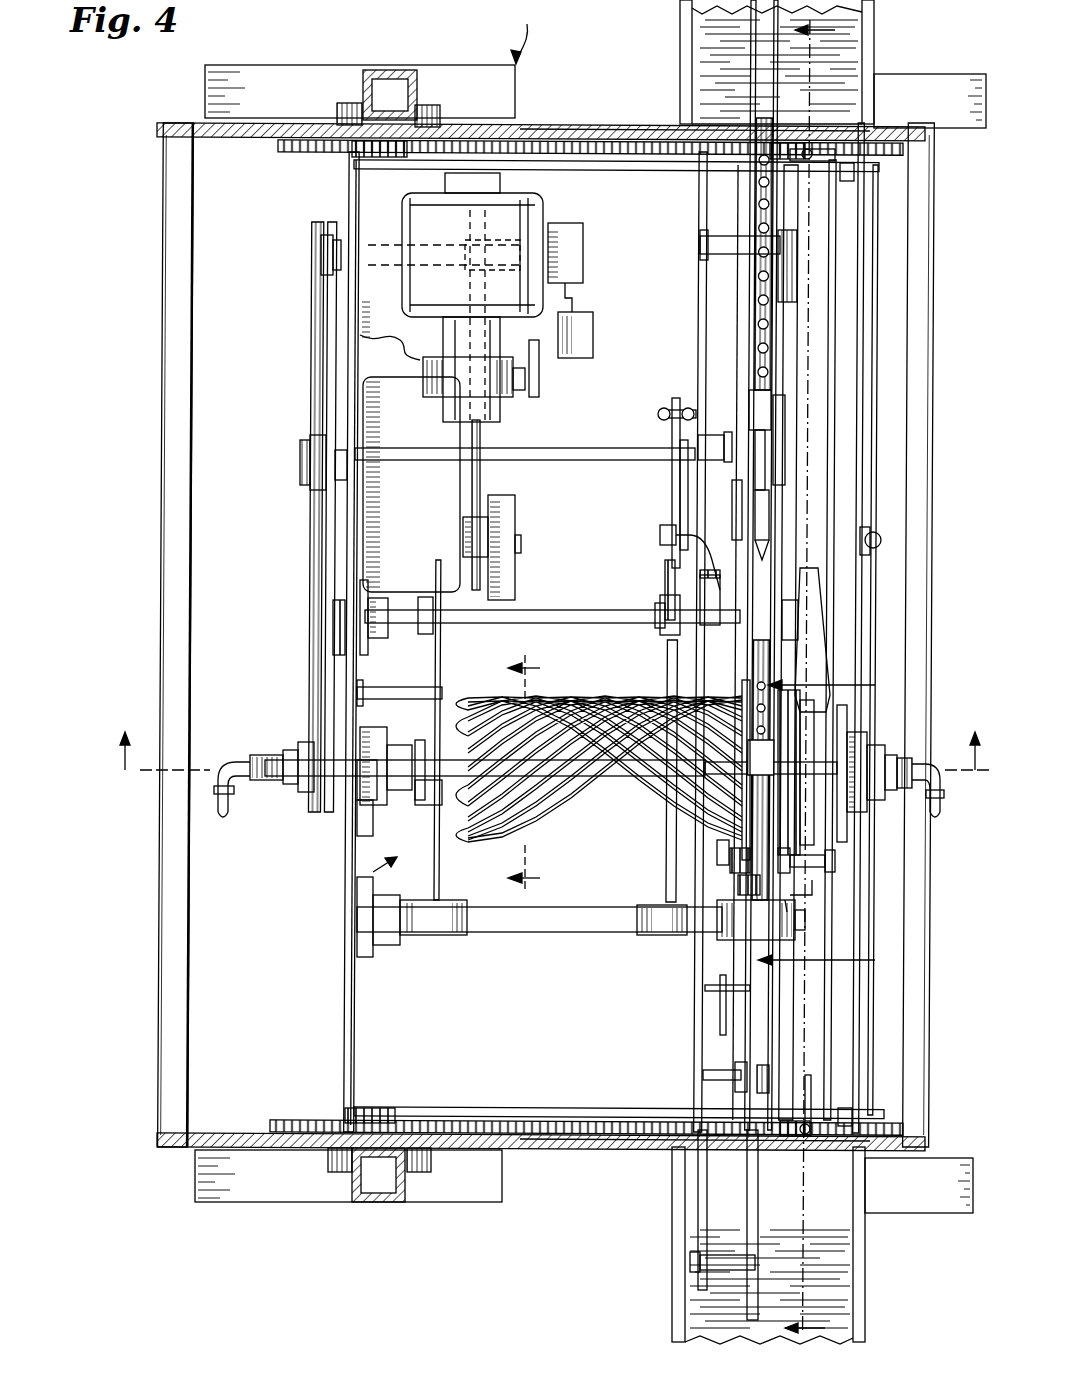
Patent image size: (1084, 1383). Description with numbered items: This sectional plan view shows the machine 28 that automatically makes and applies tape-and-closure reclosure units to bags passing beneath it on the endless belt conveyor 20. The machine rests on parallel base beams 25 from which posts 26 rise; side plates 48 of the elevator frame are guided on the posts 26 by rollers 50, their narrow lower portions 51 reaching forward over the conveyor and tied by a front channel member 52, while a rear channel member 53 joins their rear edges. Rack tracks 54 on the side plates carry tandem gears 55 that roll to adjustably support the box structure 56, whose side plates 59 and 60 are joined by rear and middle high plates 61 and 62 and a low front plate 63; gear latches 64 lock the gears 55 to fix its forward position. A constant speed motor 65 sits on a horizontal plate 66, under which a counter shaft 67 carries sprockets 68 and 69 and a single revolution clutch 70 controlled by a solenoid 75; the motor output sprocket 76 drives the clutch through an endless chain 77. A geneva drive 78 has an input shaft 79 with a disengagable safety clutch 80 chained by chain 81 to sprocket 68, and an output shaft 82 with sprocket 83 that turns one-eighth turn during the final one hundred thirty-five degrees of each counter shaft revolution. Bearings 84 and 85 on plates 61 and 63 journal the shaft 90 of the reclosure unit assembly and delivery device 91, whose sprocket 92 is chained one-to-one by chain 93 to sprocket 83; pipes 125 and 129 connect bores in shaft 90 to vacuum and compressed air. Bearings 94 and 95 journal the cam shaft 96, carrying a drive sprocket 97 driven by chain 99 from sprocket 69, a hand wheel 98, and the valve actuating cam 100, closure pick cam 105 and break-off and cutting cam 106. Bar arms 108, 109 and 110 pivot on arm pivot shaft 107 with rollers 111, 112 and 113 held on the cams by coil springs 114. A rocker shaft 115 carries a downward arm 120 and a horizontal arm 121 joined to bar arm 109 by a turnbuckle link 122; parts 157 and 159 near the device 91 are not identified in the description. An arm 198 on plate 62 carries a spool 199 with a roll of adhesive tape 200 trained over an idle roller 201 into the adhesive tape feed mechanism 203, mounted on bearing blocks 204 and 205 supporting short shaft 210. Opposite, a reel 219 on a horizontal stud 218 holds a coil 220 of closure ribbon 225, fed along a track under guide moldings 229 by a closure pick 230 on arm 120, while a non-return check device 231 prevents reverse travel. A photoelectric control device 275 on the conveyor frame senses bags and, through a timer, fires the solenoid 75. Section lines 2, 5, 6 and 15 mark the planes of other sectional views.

The section line 2- 2 is at (534, 771).
The section line 5- 5 is at (818, 678).
The section line 6- 6 is at (828, 823).
The section line 15- 15 is at (549, 767).
The endless belt conveyor 20 is at (850, 10).
The base beams 25 is at (212, 92).
The posts 26 is at (392, 70).
The machine 28 is at (527, 32).
The side plates 48 is at (298, 125).
The rollers 50 is at (350, 103).
The narrow lower portions 51 is at (620, 135).
The front channel member 52 is at (915, 1050).
The rear channel member 53 is at (172, 1008).
The rack tracks 54 is at (282, 155).
The gears 55 is at (350, 157).
The box structure 56 is at (342, 1043).
The side plate 59 is at (618, 170).
The side plate 60 is at (566, 1108).
The rear high plate 61 is at (342, 1000).
The middle high plate 62 is at (695, 1047).
The low front plate 63 is at (808, 1034).
The gear latches 64 is at (855, 175).
The constant speed motor 65 is at (520, 205).
The horizontal plate 66 is at (370, 324).
The counter shaft 67 is at (320, 255).
The sprocket 68 is at (403, 232).
The sprocket 69 is at (333, 268).
The single revolution clutch 70 is at (555, 226).
The solenoid 75 is at (580, 330).
The output sprocket 76 is at (540, 385).
The endless chain 77 is at (535, 368).
The geneva drive 78 is at (363, 390).
The input shaft 79 is at (463, 538).
The safety clutch 80 is at (505, 528).
The endless chain 81 is at (480, 478).
The output shaft 82 is at (300, 464).
The sprocket 83 is at (310, 488).
The bearing 84 is at (350, 825).
The bearing 85 is at (850, 722).
The shaft 90 is at (335, 760).
The reclosure unit assembly and delivery device 91 is at (345, 872).
The sprocket 92 is at (298, 745).
The endless chain 93 is at (310, 678).
The bearing 94 is at (360, 590).
The bearing 95 is at (702, 588).
The cam shaft 96 is at (528, 610).
The drive sprocket 97 is at (333, 638).
The hand wheel 98 is at (830, 625).
The endless chain 99 is at (360, 352).
The valve actuating cam 100 is at (433, 622).
The closure pick cam 105 is at (662, 606).
The closure break-off and adhesive strip cutting cam 106 is at (757, 660).
The arm pivot shaft 107 is at (530, 920).
The bar arm 108 is at (450, 886).
The bar arm 109 is at (667, 888).
The bar arm 110 is at (700, 940).
The cam responsive roller 111 is at (441, 640).
The cam responsive roller 112 is at (658, 628).
The cam responsive roller 113 is at (660, 533).
The coil springs 114 is at (664, 410).
The rocker shaft 115 is at (400, 450).
The arm 120 is at (700, 438).
The arm 121 is at (680, 500).
The turnbuckle link 122 is at (665, 566).
The pipe 125 is at (238, 815).
The pipe 129 is at (933, 772).
The collar 157 is at (425, 800).
The shaft 159 is at (395, 688).
The arm 198 is at (698, 1230).
The spool 199 is at (690, 1265).
The roll of adhesive tape 200 is at (745, 1178).
The idle roller 201 is at (769, 1088).
The adhesive tape feed mechanism 203 is at (790, 920).
The bearing block 204 is at (717, 855).
The bearing block 205 is at (835, 860).
The short shaft 210 is at (812, 888).
The horizontal stud 218 is at (700, 242).
The reel 219 is at (750, 88).
The coil 220 is at (758, 196).
The ribbon 225 is at (770, 535).
The guide moldings 229 is at (785, 445).
The closure pick 230 is at (770, 510).
The non-return check device 231 is at (768, 415).
The photoelectric control device 275 is at (880, 548).